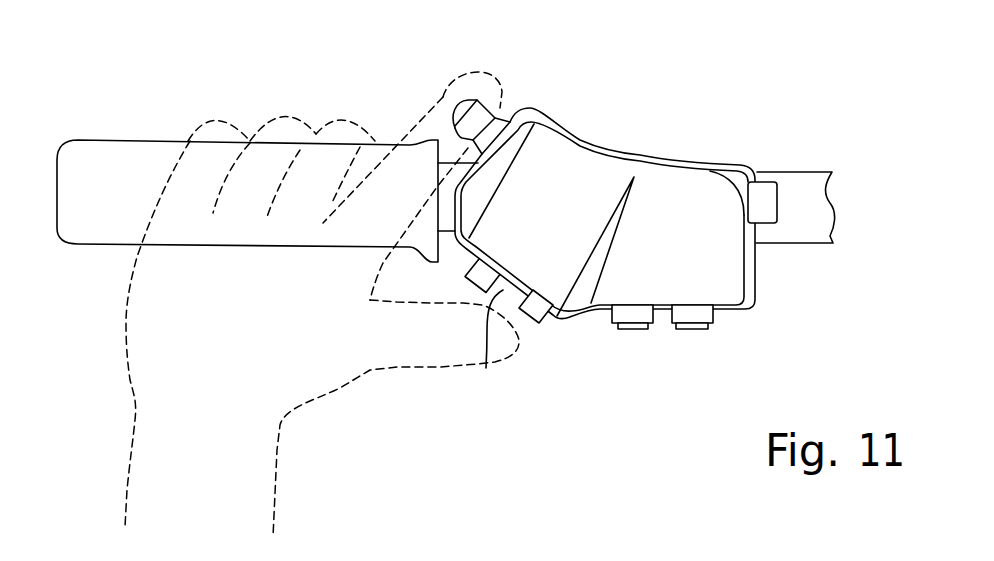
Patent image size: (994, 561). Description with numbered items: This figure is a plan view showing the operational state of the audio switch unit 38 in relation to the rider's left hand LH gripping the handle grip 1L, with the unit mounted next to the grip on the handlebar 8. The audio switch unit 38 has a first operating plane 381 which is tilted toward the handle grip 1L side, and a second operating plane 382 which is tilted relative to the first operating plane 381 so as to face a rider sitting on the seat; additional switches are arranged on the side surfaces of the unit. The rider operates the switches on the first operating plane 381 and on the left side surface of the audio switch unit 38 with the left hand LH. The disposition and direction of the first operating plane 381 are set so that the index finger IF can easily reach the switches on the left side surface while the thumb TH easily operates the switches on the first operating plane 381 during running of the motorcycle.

The handle grip 1L is at (110, 143).
The index finger IF is at (487, 68).
The audio switch unit 38 is at (582, 153).
The handlebar 8 is at (797, 180).
The left hand LH is at (187, 309).
The thumb TH is at (508, 344).
The first operating plane 381 is at (486, 368).
The second operating plane 382 is at (662, 326).